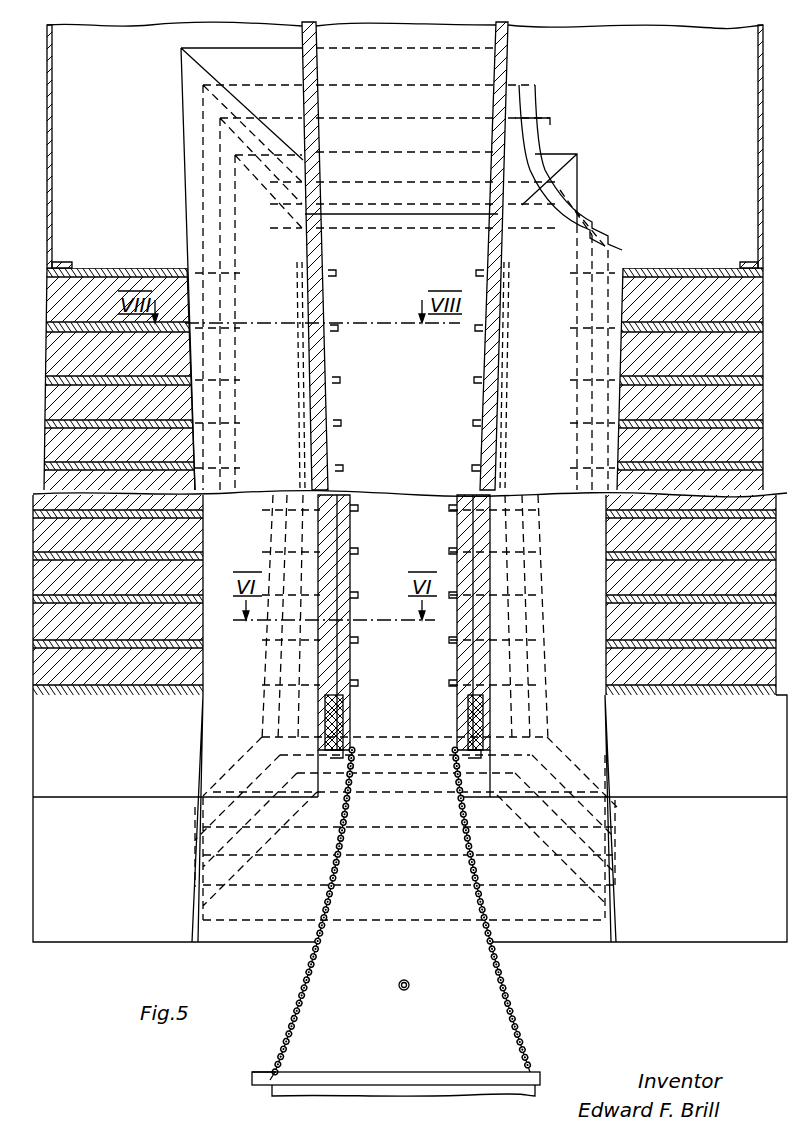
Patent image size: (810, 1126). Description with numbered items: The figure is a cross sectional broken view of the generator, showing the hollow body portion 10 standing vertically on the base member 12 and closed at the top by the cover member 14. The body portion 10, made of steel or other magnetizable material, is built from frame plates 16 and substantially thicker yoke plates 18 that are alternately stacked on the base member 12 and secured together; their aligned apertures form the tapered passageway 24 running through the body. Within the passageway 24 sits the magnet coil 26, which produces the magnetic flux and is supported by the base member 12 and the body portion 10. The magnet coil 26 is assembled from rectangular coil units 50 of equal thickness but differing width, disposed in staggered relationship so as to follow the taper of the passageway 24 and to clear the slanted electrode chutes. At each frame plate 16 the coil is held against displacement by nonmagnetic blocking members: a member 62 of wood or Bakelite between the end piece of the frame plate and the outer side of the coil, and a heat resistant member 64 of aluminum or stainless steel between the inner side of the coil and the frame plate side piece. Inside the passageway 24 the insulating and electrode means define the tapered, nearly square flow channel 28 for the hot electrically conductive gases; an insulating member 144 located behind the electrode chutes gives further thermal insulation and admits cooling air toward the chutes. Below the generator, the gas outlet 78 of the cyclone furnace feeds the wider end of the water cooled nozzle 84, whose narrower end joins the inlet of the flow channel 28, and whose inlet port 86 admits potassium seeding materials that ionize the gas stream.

The hollow body portion 10 is at (760, 295).
The base member 12 is at (712, 956).
The cover member 14 is at (758, 108).
The frame plates 16 is at (758, 402).
The yoke plates 18 is at (755, 350).
The passageway 24 is at (328, 450).
The magnet coil 26 is at (181, 110).
The flow channel 28 is at (406, 790).
The coil units 50 is at (548, 150).
The blocking member 62 is at (220, 375).
The blocking member 64 is at (330, 378).
The gas outlet 78 is at (286, 1090).
The water cooled nozzle 84 is at (505, 990).
The inlet port 86 is at (410, 982).
The insulating member 144 is at (465, 534).